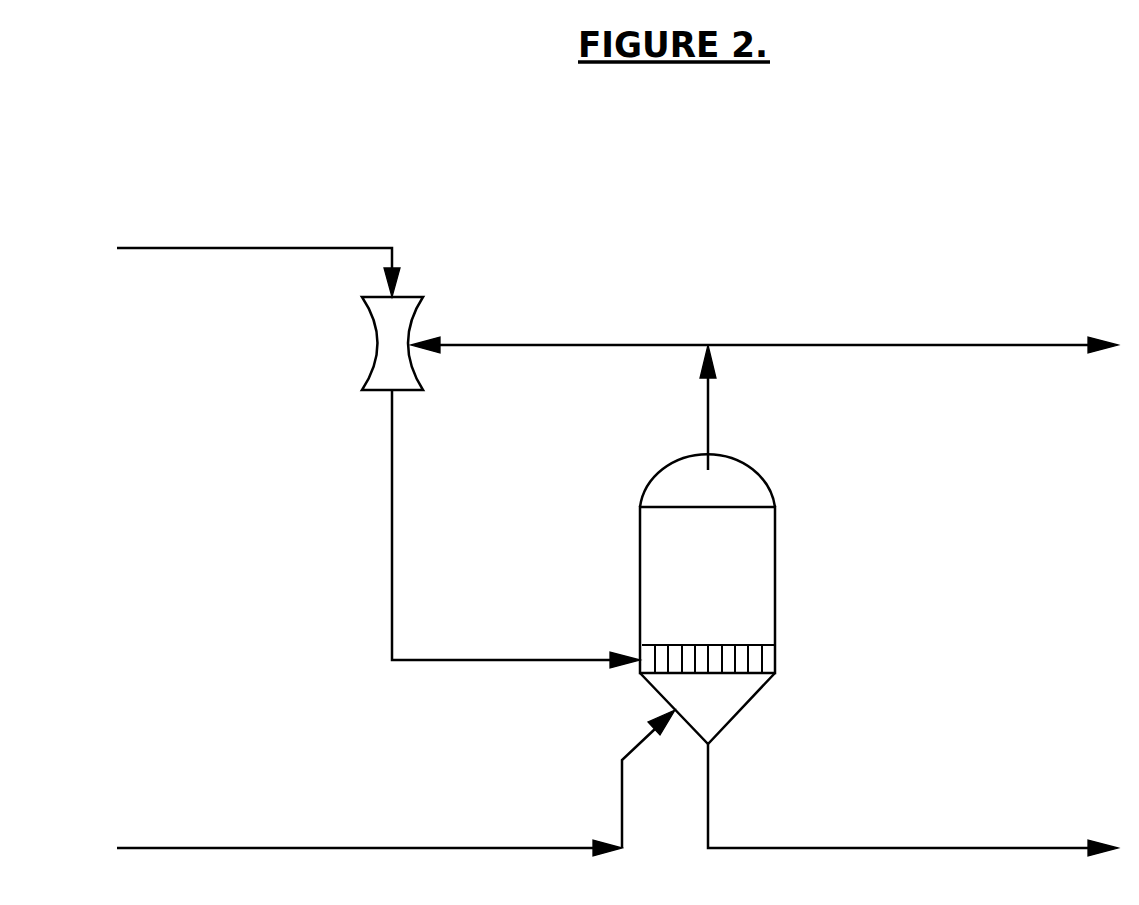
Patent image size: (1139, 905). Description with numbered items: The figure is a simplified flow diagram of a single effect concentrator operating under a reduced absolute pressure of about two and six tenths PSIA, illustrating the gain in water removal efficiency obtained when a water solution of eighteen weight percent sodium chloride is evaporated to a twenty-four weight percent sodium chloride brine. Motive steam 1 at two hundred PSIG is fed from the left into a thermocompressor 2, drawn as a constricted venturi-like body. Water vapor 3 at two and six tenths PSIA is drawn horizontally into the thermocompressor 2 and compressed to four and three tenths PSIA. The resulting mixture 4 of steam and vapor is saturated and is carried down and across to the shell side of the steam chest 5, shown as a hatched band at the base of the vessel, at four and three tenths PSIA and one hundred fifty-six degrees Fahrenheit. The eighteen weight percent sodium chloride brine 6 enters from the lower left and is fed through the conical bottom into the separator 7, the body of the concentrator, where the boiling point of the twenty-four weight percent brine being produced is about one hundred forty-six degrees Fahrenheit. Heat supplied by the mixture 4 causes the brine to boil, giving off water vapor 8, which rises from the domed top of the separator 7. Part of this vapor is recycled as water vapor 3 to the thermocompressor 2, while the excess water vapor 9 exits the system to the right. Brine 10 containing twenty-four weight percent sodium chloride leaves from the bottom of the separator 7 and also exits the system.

The motive steam 1 is at (258, 261).
The thermocompressor 2 is at (381, 343).
The water vapor 3 is at (559, 332).
The mixture of steam and vapor 4 is at (516, 529).
The steam chest 5 is at (800, 657).
The sodium chloride brine feed 6 is at (396, 783).
The separator 7 is at (707, 599).
The water vapor 8 is at (718, 407).
The excess water vapor 9 is at (913, 332).
The brine 10 is at (913, 800).